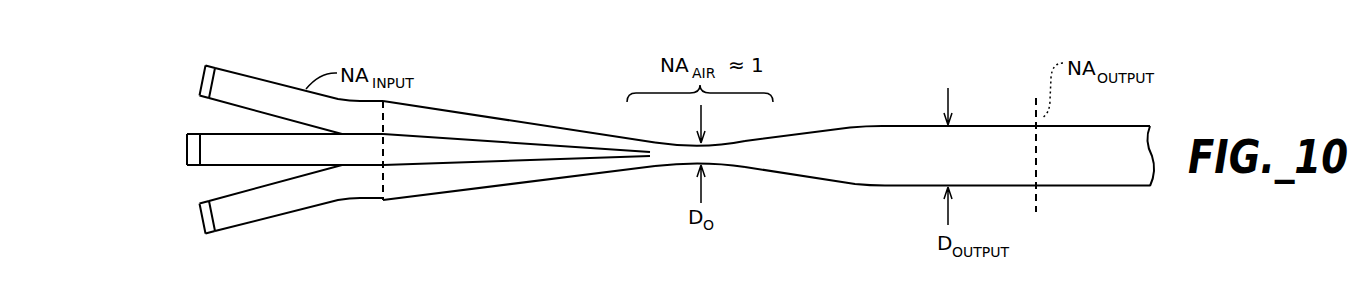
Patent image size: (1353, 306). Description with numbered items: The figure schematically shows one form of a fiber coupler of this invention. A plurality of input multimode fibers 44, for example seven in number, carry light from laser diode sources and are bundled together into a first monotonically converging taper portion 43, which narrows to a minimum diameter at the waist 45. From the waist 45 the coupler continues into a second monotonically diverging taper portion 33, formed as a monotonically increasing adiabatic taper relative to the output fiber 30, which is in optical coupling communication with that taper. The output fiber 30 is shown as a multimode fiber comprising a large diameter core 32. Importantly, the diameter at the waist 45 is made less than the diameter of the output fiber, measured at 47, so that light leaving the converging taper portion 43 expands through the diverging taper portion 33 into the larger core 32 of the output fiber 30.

The output fiber 30 is at (253, 76).
The large diameter core 32 is at (1065, 182).
The second monotonically diverging taper portion 33 is at (783, 135).
The first monotonically converging taper portion 43 is at (494, 115).
The input multimode fibers 44 is at (198, 78).
The waist 45 is at (706, 144).
The output fiber diameter location 47 is at (956, 125).